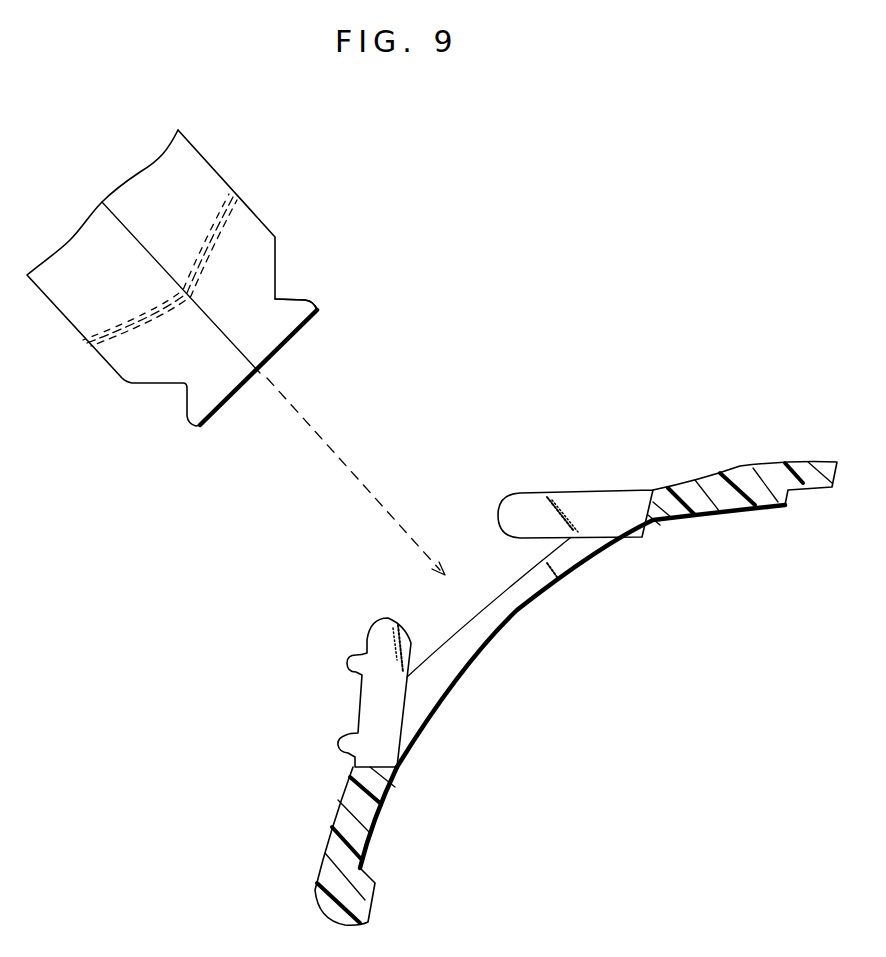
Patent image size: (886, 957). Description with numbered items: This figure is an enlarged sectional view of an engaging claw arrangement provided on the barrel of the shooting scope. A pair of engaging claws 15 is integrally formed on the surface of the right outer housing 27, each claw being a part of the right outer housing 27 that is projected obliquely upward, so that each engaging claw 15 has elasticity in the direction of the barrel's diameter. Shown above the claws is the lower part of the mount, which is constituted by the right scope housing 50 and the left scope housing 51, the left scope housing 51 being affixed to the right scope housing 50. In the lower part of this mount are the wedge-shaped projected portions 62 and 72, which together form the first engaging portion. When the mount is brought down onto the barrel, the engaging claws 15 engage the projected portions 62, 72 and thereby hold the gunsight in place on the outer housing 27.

The engaging claws 15 is at (537, 510).
The right outer housing 27 is at (753, 473).
The right scope housing 50 is at (95, 340).
The left scope housing 51 is at (220, 193).
The projected portion 62 is at (203, 410).
The projected portion 72 is at (300, 315).